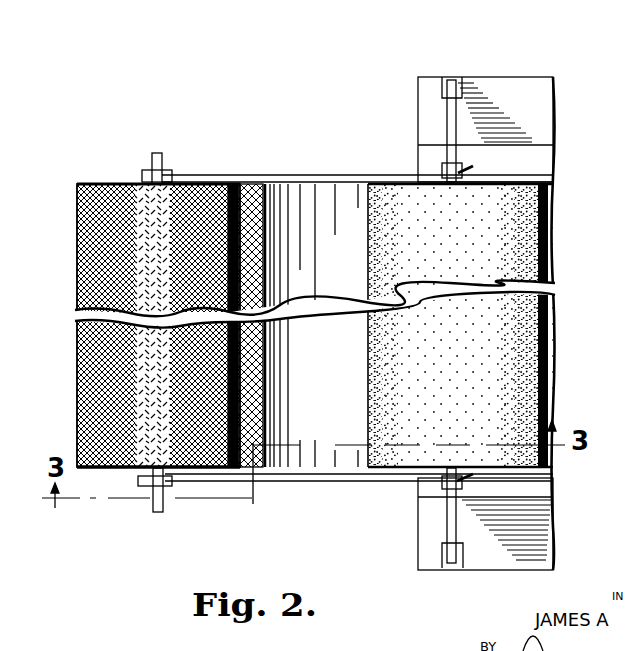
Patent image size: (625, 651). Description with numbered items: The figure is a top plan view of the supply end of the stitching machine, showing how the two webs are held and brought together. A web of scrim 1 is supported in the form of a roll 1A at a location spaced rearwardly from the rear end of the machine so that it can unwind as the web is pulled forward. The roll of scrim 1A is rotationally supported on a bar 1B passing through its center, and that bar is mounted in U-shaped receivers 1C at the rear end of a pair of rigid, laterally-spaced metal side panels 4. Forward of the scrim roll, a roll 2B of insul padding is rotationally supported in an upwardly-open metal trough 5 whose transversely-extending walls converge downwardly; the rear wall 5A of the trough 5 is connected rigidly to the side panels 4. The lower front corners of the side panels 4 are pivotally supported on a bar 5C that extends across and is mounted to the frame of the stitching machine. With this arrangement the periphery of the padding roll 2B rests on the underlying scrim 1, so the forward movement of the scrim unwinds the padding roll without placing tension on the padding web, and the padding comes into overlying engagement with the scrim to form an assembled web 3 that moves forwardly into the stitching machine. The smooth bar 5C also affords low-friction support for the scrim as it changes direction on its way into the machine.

The web of scrim 1 is at (254, 187).
The roll of scrim 1A is at (86, 363).
The bar 1B is at (152, 505).
The U-shaped receivers 1C is at (152, 171).
The roll of insul padding 2B is at (418, 193).
The assembled web 3 is at (557, 257).
The side panels 4 is at (289, 182).
The metal trough 5 is at (317, 197).
The rear wall of trough 5A is at (340, 370).
The bar 5C is at (450, 522).